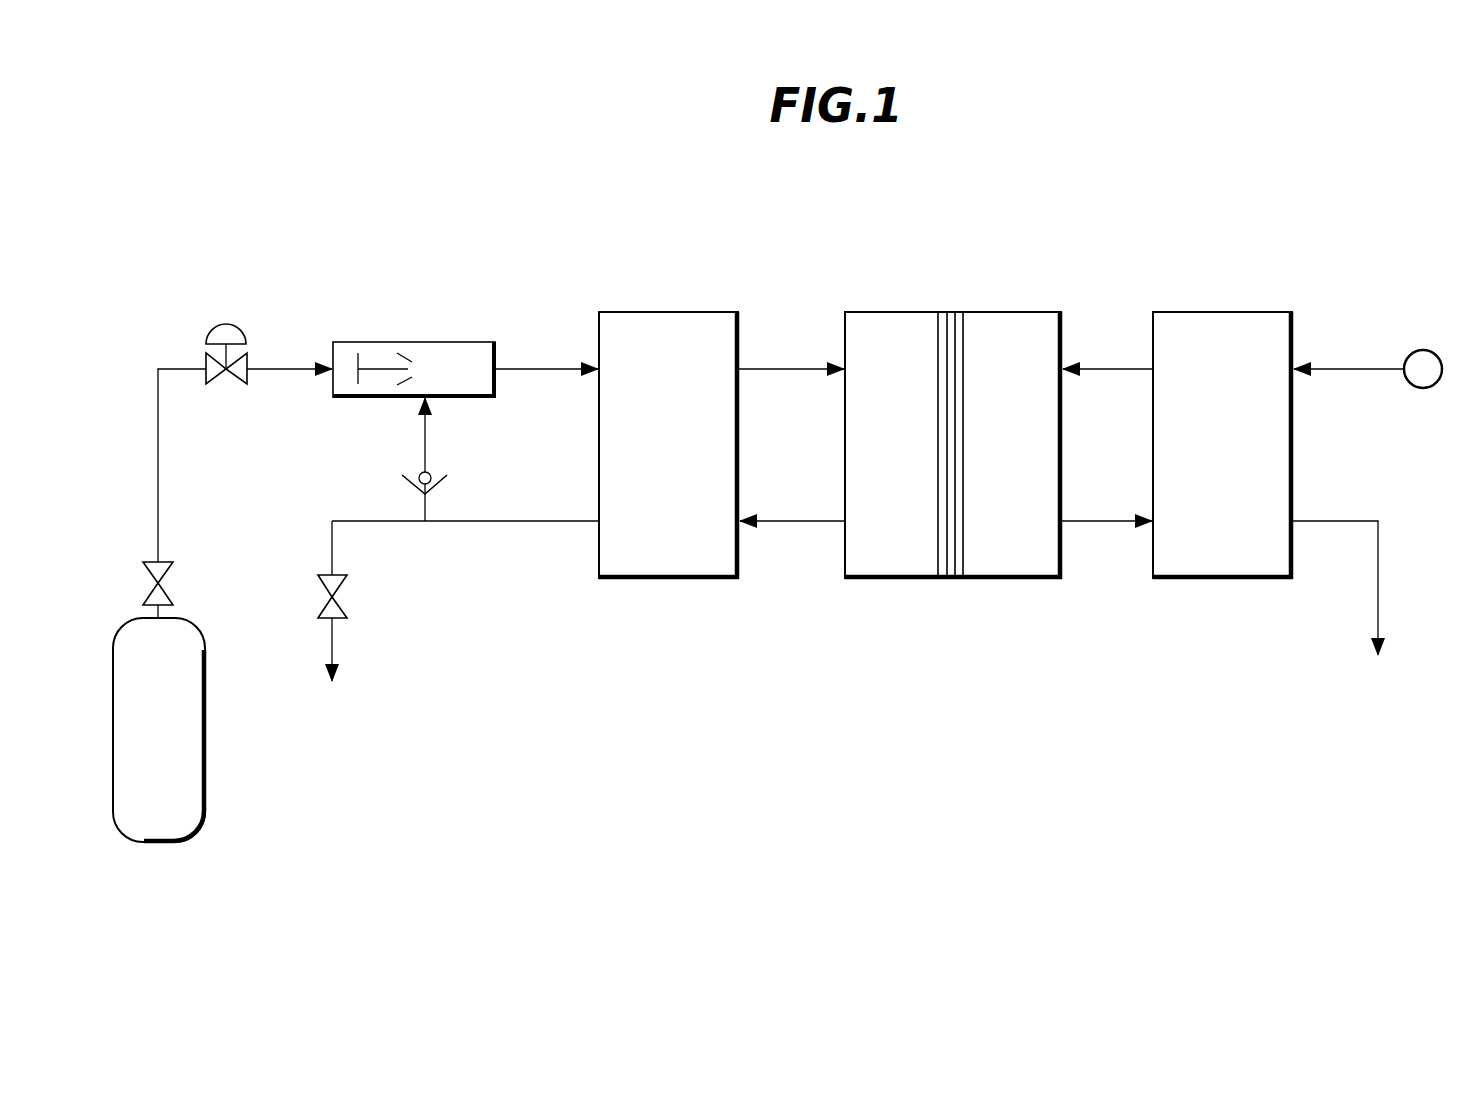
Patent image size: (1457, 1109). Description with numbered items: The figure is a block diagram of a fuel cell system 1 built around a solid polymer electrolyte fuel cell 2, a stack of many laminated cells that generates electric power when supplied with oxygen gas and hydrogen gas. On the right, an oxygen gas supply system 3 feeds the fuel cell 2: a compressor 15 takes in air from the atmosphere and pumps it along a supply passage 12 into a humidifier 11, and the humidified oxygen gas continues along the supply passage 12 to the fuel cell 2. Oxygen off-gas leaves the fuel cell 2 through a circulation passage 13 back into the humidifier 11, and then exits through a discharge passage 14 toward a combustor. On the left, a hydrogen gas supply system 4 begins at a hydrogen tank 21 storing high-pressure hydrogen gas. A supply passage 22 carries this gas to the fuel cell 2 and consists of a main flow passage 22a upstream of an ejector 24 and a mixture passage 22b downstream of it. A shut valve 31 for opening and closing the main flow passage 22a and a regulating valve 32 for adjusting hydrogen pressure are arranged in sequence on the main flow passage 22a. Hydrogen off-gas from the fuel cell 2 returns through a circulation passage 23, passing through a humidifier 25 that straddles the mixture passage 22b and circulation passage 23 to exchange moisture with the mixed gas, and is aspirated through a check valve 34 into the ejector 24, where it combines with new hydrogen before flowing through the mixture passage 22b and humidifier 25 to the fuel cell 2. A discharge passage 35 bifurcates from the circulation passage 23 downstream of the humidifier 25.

The fuel cell system 1 is at (856, 748).
The fuel cell 2 is at (990, 312).
The oxygen gas supply system 3 is at (1130, 636).
The hydrogen gas supply system 4 is at (576, 642).
The humidifier 11 is at (1232, 312).
The supply passage 12 is at (1102, 367).
The circulation passage 13 is at (1100, 521).
The discharge passage 14 is at (1344, 521).
The compressor 15 is at (1432, 350).
The hydrogen tank 21 is at (205, 785).
The supply passage 22 is at (501, 422).
The main flow passage 22a is at (290, 369).
The mixture passage 22b is at (535, 369).
The circulation passage 23 is at (425, 442).
The ejector 24 is at (333, 393).
The humidifier 25 is at (654, 312).
The shut valve 31 is at (175, 577).
The regulating valve 32 is at (226, 324).
The check valve 34 is at (403, 485).
The discharge passage 35 is at (335, 542).